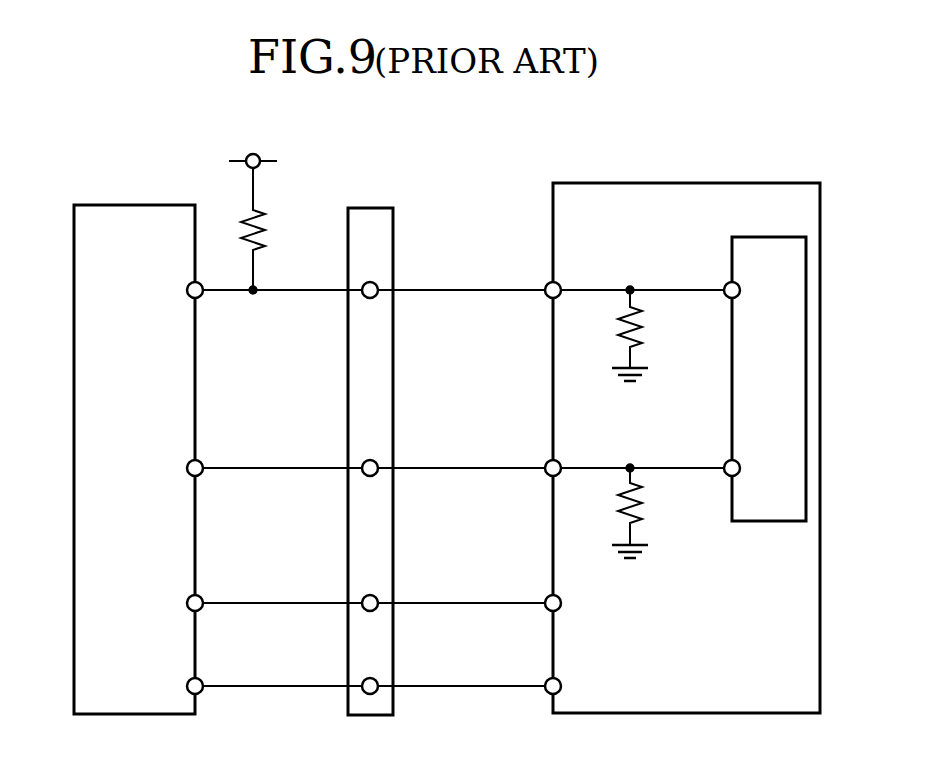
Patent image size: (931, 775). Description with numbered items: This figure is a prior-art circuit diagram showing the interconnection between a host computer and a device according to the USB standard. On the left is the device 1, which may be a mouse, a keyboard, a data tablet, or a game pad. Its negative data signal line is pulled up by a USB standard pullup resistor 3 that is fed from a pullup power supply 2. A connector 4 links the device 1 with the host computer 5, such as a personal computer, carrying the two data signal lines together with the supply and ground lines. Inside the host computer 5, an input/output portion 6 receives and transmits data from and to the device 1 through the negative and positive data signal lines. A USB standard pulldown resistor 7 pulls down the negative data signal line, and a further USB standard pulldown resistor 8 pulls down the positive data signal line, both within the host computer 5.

The device 1 is at (135, 206).
The pullup power supply 2 is at (262, 156).
The USB standard pullup resistor 3 is at (268, 222).
The connector 4 is at (368, 207).
The host computer 5 is at (682, 424).
The input/output portion 6 is at (770, 521).
The USB standard pulldown resistor 7 is at (648, 336).
The USB standard pulldown resistor 8 is at (645, 513).